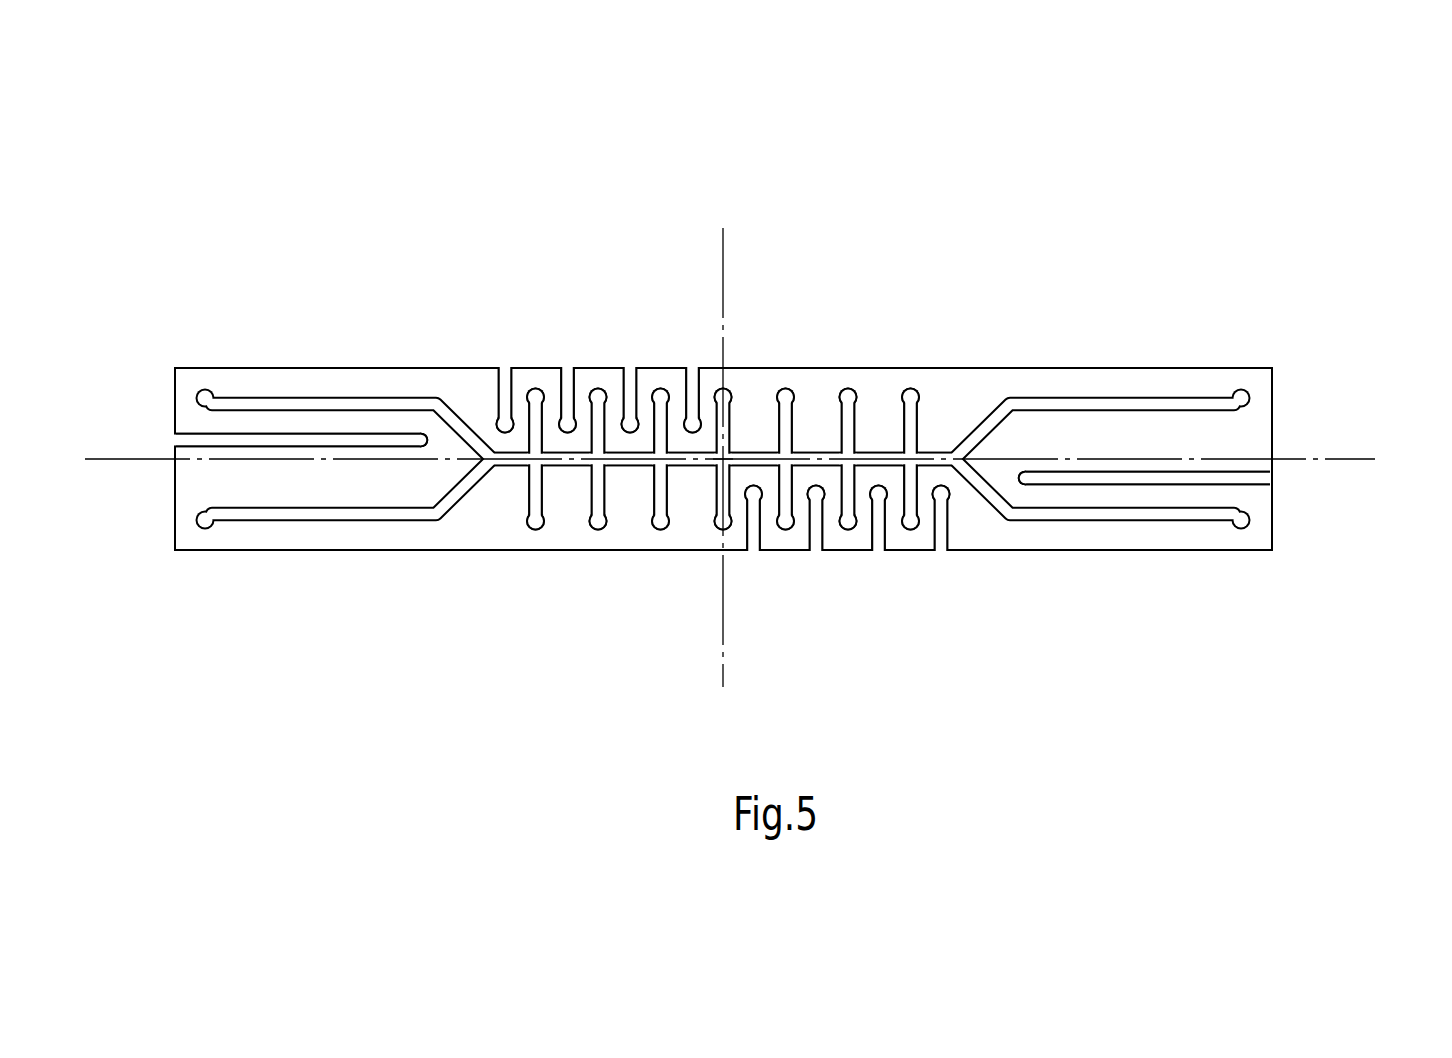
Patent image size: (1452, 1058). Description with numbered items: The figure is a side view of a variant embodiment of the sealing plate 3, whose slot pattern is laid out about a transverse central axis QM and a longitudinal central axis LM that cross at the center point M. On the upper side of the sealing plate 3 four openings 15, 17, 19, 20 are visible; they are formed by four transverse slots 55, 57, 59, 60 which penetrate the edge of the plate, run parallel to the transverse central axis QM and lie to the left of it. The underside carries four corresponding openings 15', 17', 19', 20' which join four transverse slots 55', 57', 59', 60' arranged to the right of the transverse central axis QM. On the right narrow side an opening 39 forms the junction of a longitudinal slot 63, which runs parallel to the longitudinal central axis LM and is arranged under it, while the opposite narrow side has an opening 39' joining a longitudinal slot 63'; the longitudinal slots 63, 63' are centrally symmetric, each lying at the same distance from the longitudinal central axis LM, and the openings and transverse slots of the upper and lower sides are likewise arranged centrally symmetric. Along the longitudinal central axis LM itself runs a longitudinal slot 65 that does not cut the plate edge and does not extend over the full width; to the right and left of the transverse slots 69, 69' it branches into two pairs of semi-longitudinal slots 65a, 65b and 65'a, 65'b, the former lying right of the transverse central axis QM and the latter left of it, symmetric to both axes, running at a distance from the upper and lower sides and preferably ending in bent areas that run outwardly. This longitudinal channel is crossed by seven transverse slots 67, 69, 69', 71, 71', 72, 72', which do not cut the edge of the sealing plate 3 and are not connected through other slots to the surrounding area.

The sealing plate 3 is at (1212, 296).
The opening 15 is at (485, 308).
The opening 17 is at (576, 349).
The opening 19 is at (643, 332).
The opening 20 is at (701, 325).
The opening 15' is at (955, 609).
The opening 17' is at (887, 617).
The opening 19' is at (814, 617).
The opening 20' is at (744, 618).
The transverse slot 55 is at (440, 317).
The transverse slot 57 is at (536, 293).
The transverse slot 59 is at (602, 280).
The transverse slot 60 is at (663, 278).
The transverse slot 55' is at (981, 612).
The transverse slot 57' is at (913, 620).
The transverse slot 59' is at (847, 626).
The transverse slot 60' is at (785, 628).
The longitudinal slot 63 is at (1153, 589).
The longitudinal slot 63' is at (293, 347).
The opening 39 is at (1319, 533).
The opening 39' is at (131, 372).
The longitudinal slot 65 is at (1105, 369).
The semi-longitudinal slot 65a is at (1050, 408).
The semi-longitudinal slot 65b is at (1065, 513).
The semi-longitudinal slot 65'a is at (305, 328).
The semi-longitudinal slot 65'b is at (305, 606).
The transverse slot 67 is at (743, 413).
The transverse slot 69 is at (470, 539).
The transverse slot 71 is at (538, 539).
The transverse slot 72 is at (605, 539).
The transverse slot 69' is at (978, 353).
The transverse slot 71' is at (906, 357).
The transverse slot 72' is at (834, 372).
The center point M is at (716, 462).
The transverse central axis QM is at (730, 258).
The longitudinal central axis LM is at (1338, 458).